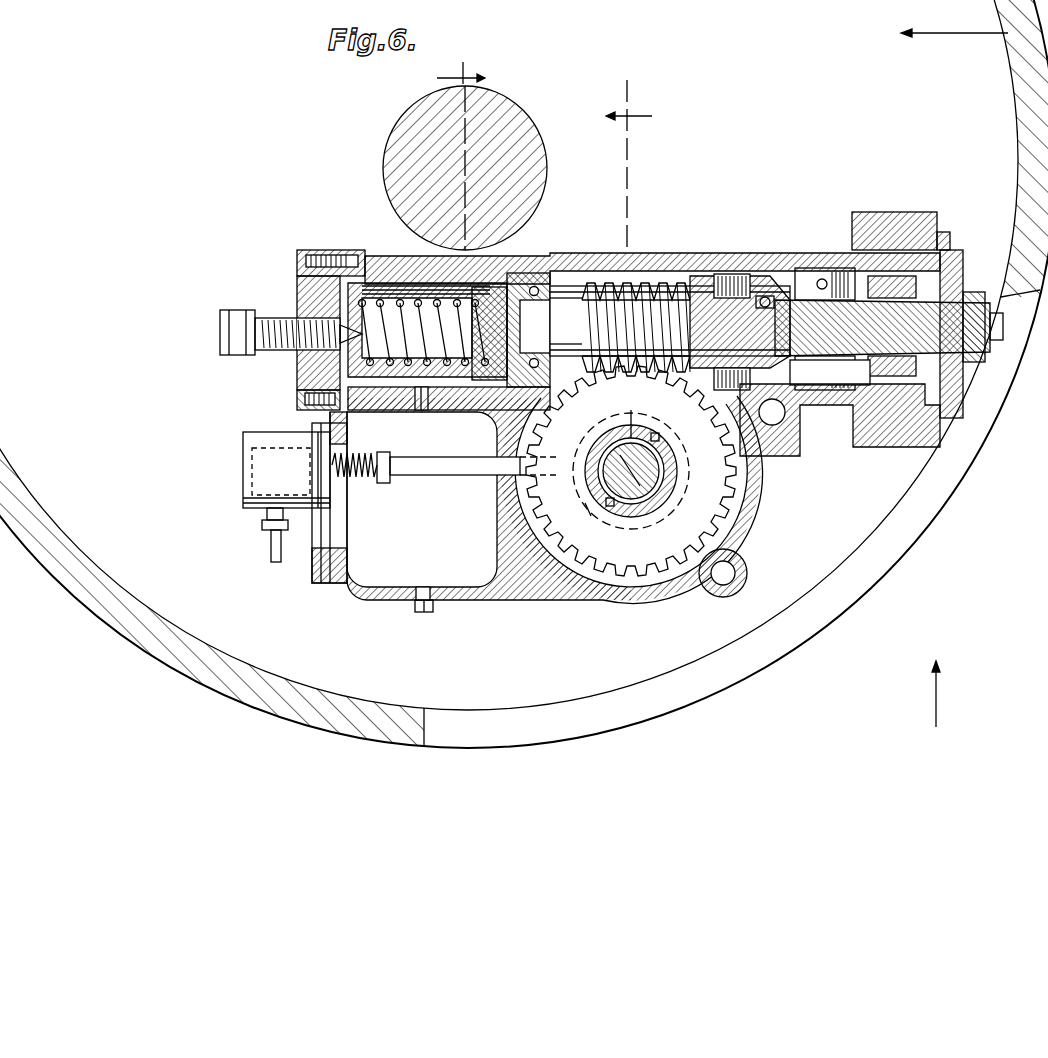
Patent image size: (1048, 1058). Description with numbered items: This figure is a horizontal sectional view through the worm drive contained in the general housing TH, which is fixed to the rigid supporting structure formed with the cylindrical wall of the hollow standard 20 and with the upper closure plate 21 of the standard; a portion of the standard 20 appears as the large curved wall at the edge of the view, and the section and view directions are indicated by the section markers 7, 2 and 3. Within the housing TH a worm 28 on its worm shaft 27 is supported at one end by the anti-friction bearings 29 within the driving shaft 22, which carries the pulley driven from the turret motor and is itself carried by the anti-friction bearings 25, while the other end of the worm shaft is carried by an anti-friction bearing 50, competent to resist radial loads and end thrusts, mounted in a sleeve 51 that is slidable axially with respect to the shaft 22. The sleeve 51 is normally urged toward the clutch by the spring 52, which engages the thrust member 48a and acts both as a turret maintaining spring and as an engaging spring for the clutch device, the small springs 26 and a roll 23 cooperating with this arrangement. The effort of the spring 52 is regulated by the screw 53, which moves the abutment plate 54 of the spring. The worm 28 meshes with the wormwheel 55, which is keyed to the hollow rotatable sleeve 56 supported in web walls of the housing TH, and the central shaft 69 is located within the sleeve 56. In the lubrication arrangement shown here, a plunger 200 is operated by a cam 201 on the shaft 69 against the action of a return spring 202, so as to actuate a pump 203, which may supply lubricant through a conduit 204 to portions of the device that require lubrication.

The hollow standard 20 is at (98, 572).
The roll 23 is at (525, 119).
The section line 7- 7 is at (544, 152).
The view direction arrow 2 is at (954, 25).
The view direction arrow 3 is at (945, 694).
The general housing TH is at (680, 262).
The abutment plate 54 is at (375, 266).
The screw 53 is at (262, 322).
The spring 52 is at (420, 303).
The thrust member 48a is at (478, 382).
The sleeve 51 is at (522, 282).
The anti-friction bearing 50 is at (538, 288).
The worm 28 is at (629, 292).
The worm hub 27 is at (673, 278).
The spring 26 is at (738, 276).
The ball retainer 29 is at (762, 303).
The bearing 25 is at (777, 284).
The shaft 22 is at (826, 305).
The upper closure plate 21 is at (958, 252).
The central shaft 69 is at (601, 452).
The cam 201 is at (589, 508).
The wormwheel 55 is at (718, 478).
The hollow rotatable sleeve 56 is at (612, 474).
The plunger 200 is at (447, 468).
The return spring 202 is at (366, 484).
The pump 203 is at (262, 441).
The conduit 204 is at (271, 546).